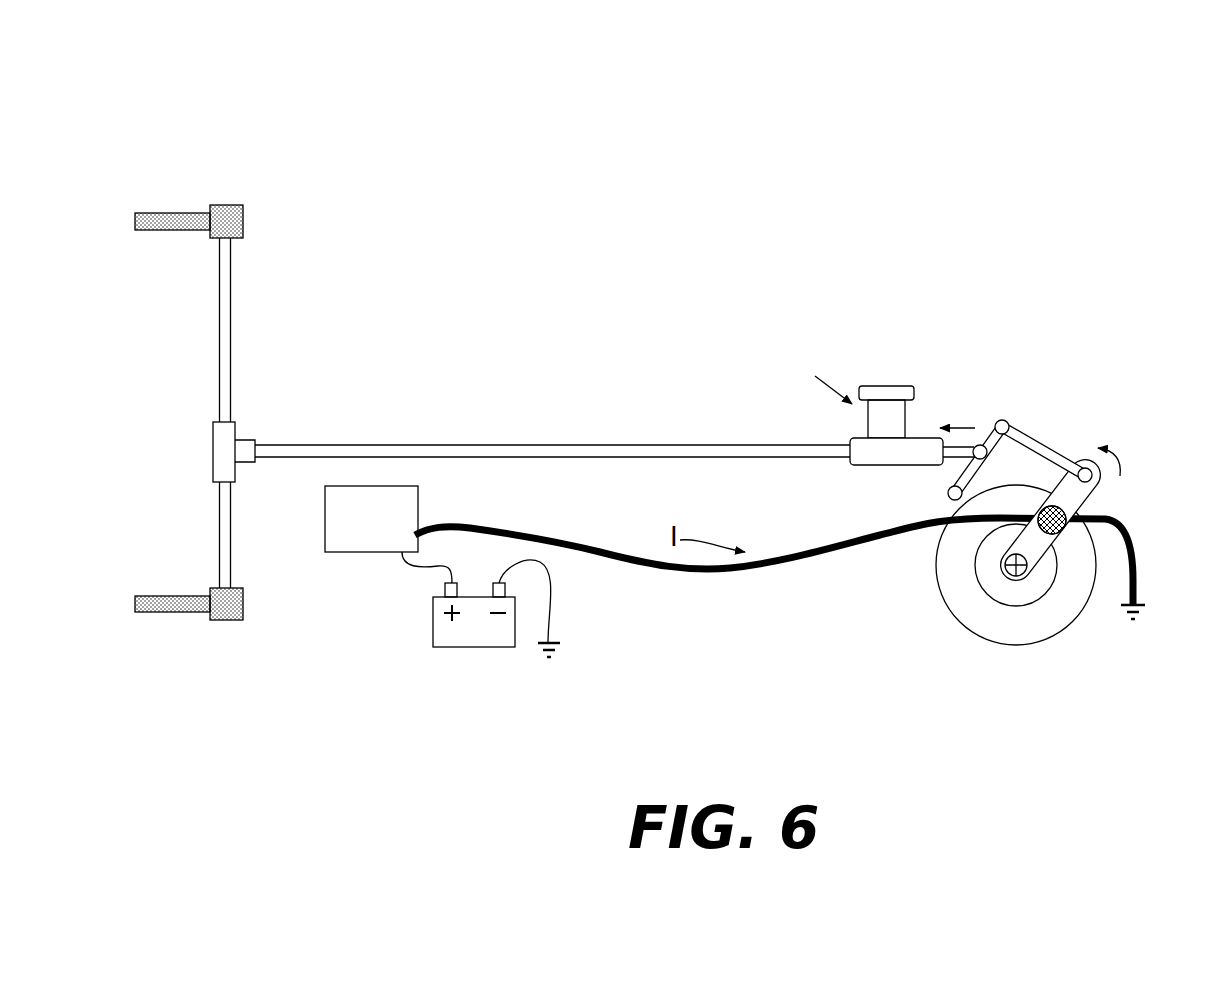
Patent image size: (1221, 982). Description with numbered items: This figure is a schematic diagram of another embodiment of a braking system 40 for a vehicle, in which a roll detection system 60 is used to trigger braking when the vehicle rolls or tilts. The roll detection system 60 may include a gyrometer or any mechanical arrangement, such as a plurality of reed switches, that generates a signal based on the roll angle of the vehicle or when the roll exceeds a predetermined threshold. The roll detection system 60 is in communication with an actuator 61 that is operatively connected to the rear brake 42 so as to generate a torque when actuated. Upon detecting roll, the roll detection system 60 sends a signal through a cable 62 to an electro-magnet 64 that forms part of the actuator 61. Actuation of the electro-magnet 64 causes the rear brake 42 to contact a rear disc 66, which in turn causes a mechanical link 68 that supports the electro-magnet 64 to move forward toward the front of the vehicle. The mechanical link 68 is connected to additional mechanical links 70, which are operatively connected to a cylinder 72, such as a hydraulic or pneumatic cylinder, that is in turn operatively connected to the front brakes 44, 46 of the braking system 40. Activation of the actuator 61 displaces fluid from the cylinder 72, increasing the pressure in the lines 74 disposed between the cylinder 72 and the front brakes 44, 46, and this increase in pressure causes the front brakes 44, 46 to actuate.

The braking system 40 is at (187, 168).
The rear brake 42 is at (1110, 512).
The front brake 44 is at (228, 632).
The front brake 46 is at (238, 202).
The roll detection system 60 is at (372, 483).
The actuator 61 is at (1056, 506).
The cable 62 is at (652, 567).
The electro-magnet 64 is at (1077, 513).
The rear disc 66 is at (1010, 622).
The mechanical link 68 is at (1083, 493).
The mechanical links 70 is at (993, 438).
The cylinder 72 is at (913, 373).
The lines 74 is at (226, 513).